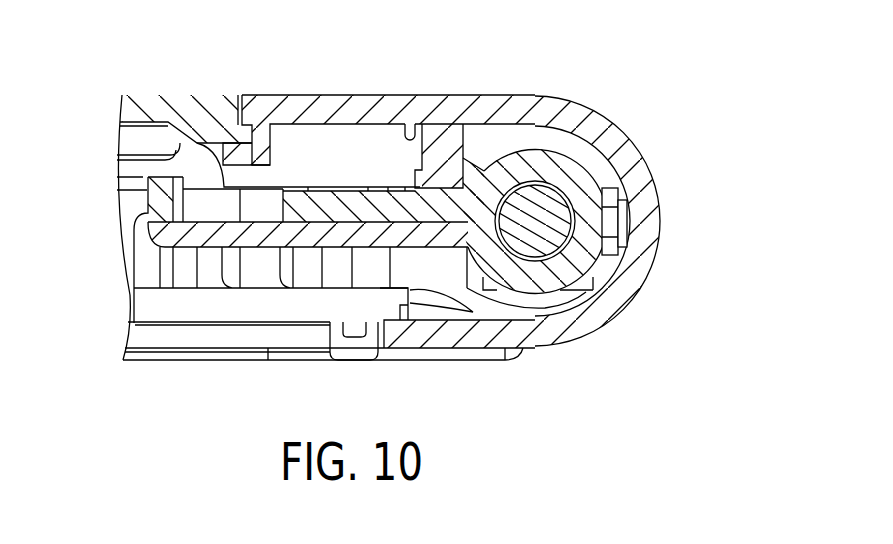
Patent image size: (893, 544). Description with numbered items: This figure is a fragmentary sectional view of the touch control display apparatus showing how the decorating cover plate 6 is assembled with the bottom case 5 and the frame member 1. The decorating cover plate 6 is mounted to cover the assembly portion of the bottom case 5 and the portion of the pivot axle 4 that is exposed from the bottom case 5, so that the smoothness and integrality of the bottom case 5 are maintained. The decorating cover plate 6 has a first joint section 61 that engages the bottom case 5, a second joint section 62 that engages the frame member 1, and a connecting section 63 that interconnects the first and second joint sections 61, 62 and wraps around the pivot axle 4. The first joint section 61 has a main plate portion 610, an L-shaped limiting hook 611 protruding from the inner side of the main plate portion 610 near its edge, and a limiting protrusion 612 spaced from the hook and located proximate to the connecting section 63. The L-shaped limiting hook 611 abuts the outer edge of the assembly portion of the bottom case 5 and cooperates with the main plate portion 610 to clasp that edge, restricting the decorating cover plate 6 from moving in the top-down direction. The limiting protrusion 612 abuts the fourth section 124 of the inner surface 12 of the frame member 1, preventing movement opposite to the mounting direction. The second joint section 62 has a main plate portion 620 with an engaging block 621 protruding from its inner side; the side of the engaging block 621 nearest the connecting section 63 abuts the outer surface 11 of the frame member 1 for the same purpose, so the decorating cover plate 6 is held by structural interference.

The frame member 1 is at (242, 300).
The pivot axle 4 is at (583, 252).
The bottom case 5 is at (188, 113).
The decorating cover plate 6 is at (453, 217).
The outer surface 11 is at (473, 312).
The inner surface 12 is at (407, 113).
The first joint section 61 is at (363, 93).
The main plate portion 610 is at (293, 100).
The L-shaped limiting hook 611 is at (238, 155).
The limiting protrusion 612 is at (413, 96).
The second joint section 62 is at (450, 352).
The main plate portion 620 is at (435, 330).
The engaging block 621 is at (405, 316).
The connecting section 63 is at (618, 150).
The fourth section 124 is at (446, 130).